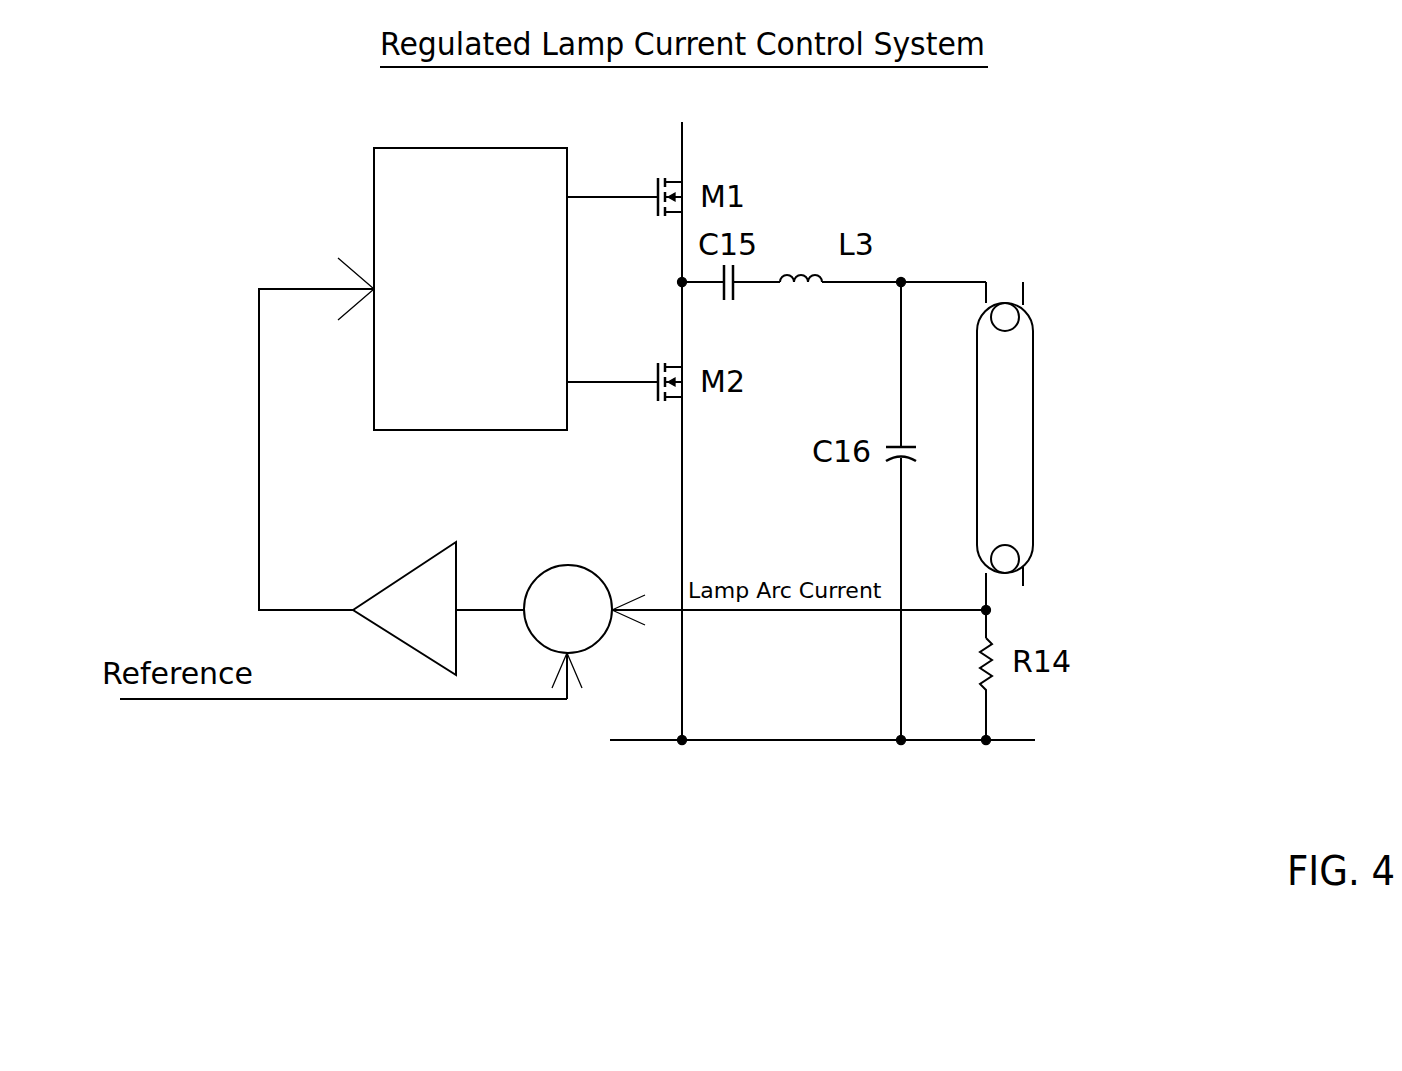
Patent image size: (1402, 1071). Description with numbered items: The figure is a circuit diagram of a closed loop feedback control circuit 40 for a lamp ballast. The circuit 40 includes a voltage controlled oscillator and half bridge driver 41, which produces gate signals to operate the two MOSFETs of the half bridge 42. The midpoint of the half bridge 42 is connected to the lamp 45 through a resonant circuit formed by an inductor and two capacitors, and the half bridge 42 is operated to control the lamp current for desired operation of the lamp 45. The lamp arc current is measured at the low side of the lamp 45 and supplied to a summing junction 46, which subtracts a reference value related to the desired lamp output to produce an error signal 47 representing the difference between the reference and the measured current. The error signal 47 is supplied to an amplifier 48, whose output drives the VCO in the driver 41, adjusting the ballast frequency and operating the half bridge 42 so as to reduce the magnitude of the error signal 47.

The circuit 40 is at (1042, 230).
The voltage controlled oscillator and half bridge driver 41 is at (373, 208).
The half bridge 42 is at (660, 303).
The lamp 45 is at (1022, 412).
The summing junction 46 is at (548, 558).
The error signal 47 is at (480, 603).
The amplifier 48 is at (393, 578).